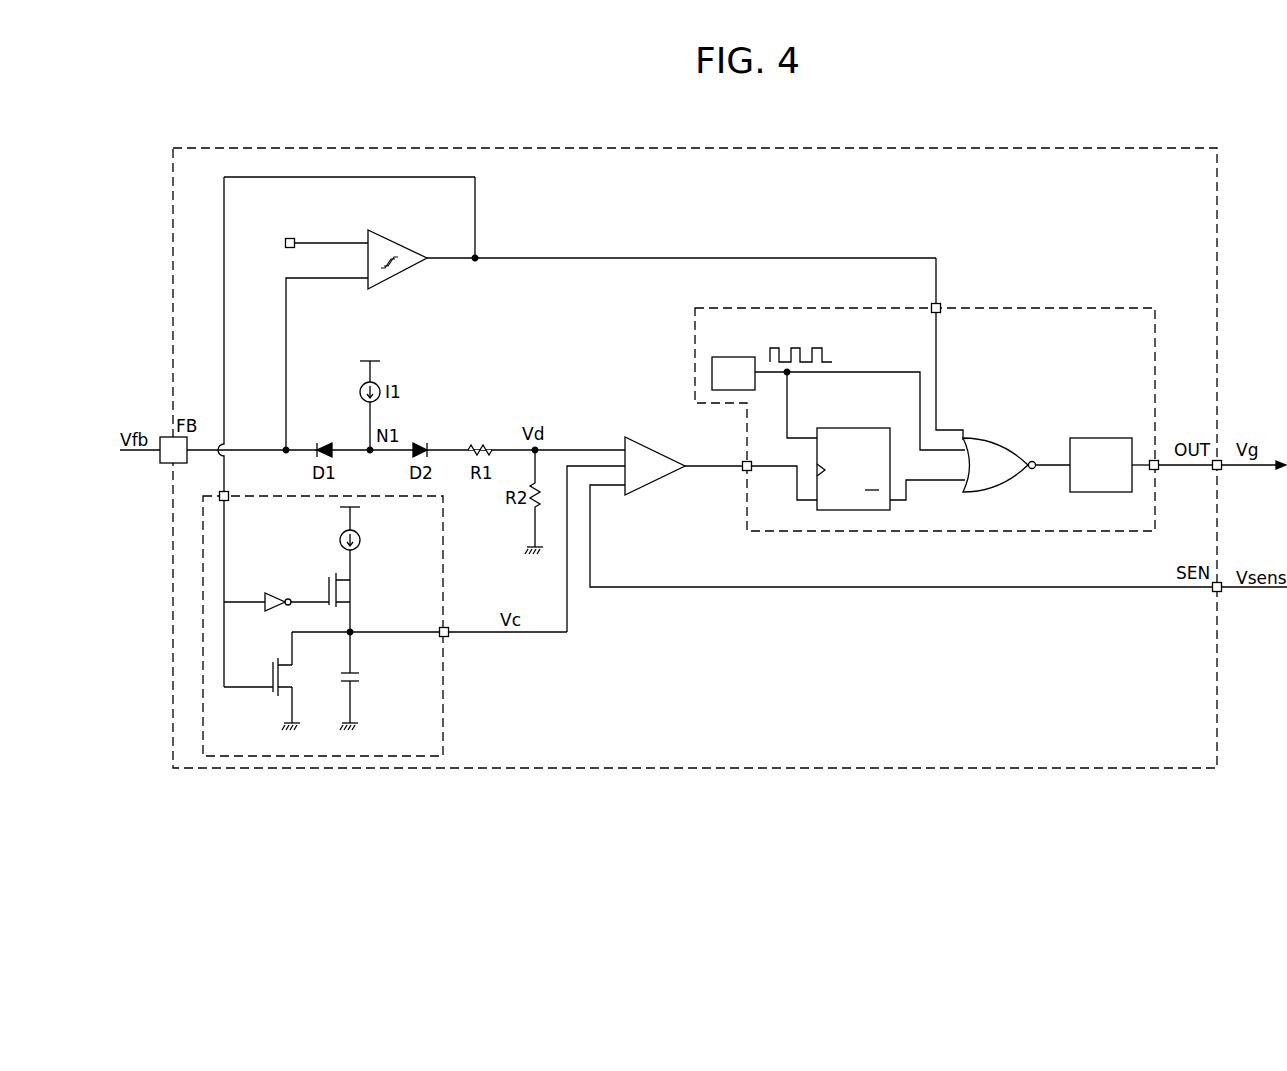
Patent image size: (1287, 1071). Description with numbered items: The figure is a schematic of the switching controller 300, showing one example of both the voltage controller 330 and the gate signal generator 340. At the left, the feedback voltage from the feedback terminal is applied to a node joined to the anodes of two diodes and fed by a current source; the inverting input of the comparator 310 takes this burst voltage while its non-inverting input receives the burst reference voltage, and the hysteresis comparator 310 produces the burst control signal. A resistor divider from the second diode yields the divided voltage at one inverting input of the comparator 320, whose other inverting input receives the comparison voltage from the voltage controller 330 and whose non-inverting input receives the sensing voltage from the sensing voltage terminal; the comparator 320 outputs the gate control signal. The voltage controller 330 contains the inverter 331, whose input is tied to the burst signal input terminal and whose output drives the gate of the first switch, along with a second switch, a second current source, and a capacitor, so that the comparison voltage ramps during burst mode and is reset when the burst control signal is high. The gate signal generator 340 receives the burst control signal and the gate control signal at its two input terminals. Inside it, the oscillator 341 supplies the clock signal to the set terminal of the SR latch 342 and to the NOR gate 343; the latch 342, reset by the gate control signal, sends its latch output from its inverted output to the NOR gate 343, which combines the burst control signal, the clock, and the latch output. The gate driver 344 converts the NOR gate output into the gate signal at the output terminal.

The switching controller 300 is at (910, 148).
The comparator 310 is at (387, 236).
The comparator 320 is at (647, 437).
The voltage controller 330 is at (350, 624).
The inverter 331 is at (290, 592).
The gate signal generator 340 is at (1083, 306).
The oscillator 341 is at (740, 357).
The SR latch 342 is at (847, 428).
The NOR gate 343 is at (988, 438).
The gate driver 344 is at (1104, 438).